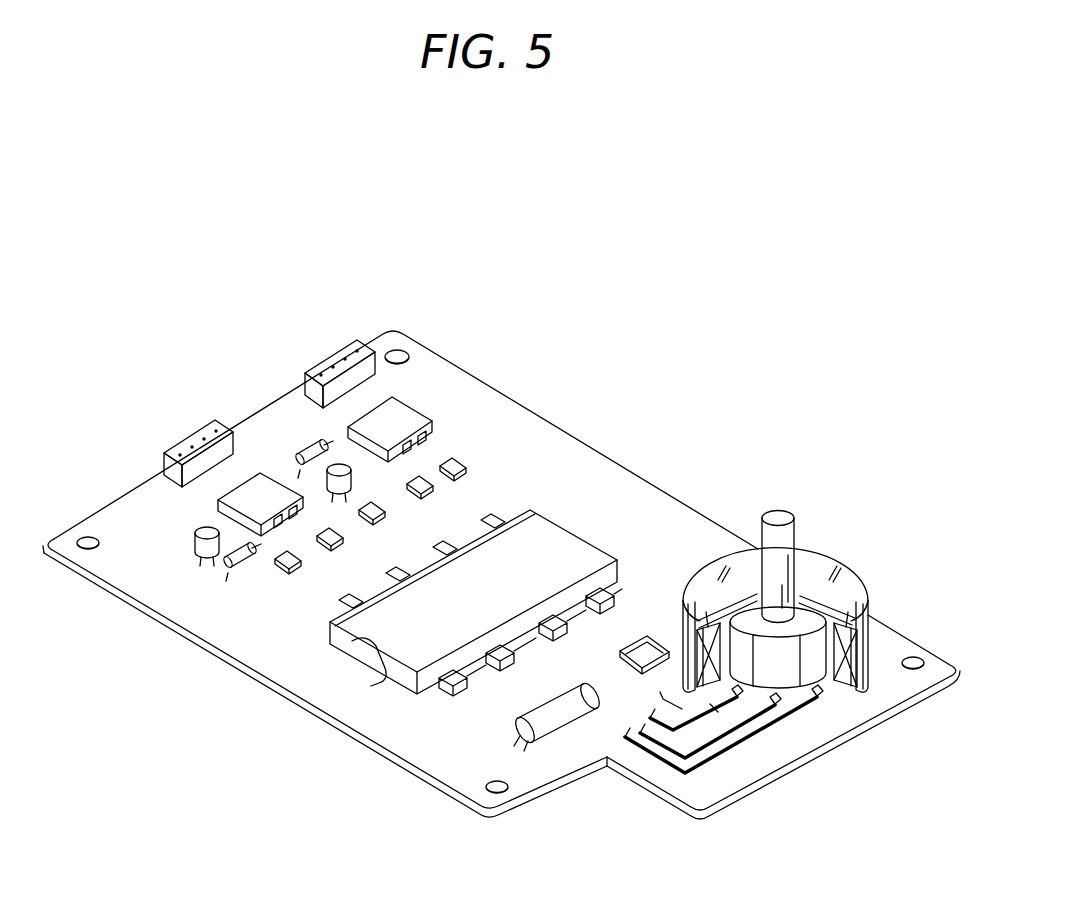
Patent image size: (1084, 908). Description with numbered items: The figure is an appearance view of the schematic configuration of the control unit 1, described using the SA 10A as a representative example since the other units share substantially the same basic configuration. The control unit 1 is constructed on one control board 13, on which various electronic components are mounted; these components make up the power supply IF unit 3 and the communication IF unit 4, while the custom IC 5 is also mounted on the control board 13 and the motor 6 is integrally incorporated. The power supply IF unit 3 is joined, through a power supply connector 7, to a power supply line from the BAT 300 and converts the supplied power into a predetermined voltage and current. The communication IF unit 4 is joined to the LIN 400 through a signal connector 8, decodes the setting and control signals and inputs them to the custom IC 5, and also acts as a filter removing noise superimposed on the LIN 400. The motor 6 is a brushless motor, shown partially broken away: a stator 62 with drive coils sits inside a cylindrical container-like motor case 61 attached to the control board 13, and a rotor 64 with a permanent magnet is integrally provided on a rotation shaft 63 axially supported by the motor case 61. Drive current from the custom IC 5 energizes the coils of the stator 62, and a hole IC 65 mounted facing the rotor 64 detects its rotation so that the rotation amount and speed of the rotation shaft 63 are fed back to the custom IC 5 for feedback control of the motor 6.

The control unit 1 is at (498, 381).
The power supply IF unit 3 is at (443, 432).
The communication IF unit 4 is at (207, 567).
The custom IC 5 is at (370, 625).
The motor 6 is at (793, 635).
The power supply connector 7 is at (342, 344).
The signal connector 8 is at (164, 455).
The control board 13 is at (475, 780).
The motor case 61 is at (848, 592).
The stator 62 is at (818, 670).
The rotation shaft 63 is at (779, 516).
The rotor 64 is at (843, 668).
The hole IC 65 is at (818, 698).
The BAT 300 is at (300, 342).
The LIN 400 is at (163, 427).
The SA 10A is at (626, 390).